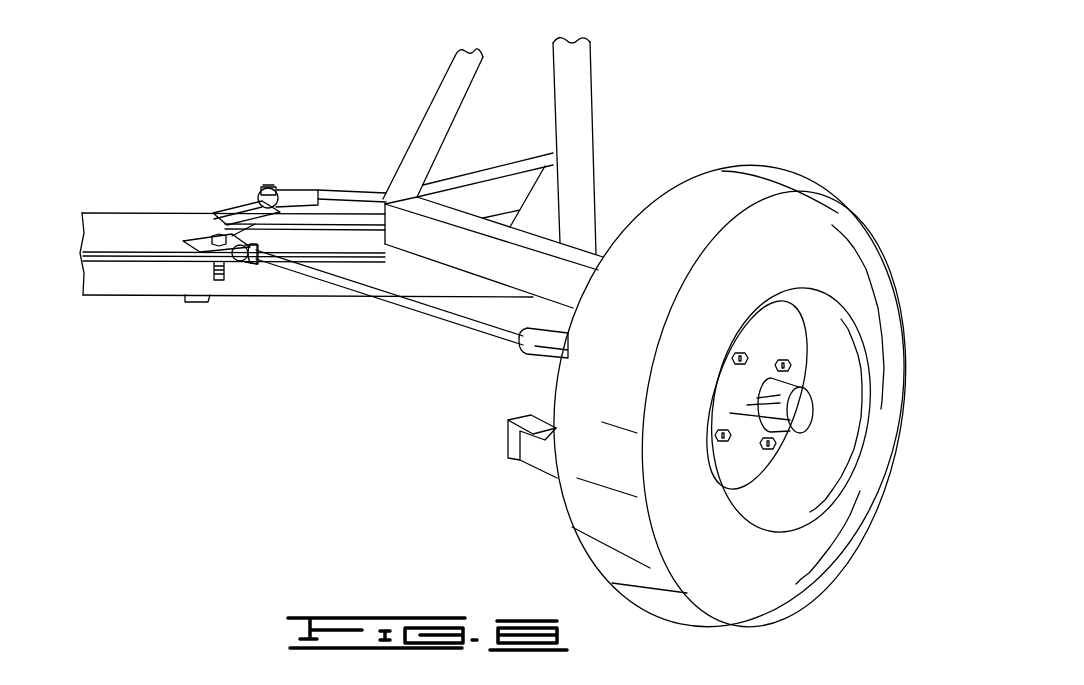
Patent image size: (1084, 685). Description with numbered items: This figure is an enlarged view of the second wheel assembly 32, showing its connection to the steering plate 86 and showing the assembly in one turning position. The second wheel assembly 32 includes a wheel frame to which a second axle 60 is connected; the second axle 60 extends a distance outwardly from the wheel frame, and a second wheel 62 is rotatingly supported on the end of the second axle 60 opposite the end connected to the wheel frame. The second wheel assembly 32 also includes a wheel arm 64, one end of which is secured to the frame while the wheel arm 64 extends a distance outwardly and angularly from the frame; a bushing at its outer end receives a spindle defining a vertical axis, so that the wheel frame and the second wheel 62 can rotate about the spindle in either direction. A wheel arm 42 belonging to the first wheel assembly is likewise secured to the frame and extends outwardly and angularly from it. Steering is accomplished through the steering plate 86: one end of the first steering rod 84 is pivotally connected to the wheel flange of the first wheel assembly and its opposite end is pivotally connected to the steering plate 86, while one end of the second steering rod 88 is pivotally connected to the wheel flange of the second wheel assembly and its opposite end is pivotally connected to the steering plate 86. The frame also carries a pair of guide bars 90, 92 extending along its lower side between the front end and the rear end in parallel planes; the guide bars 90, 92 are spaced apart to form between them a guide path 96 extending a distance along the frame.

The second wheel assembly 32 is at (728, 380).
The wheel arm 42 is at (507, 190).
The second axle 60 is at (815, 410).
The second wheel 62 is at (860, 217).
The wheel arm 64 is at (490, 272).
The first steering rod 84 is at (383, 297).
The steering plate 86 is at (160, 226).
The second steering rod 88 is at (347, 187).
The guide bar 90 is at (303, 224).
The guide bar 92 is at (262, 288).
The guide path 96 is at (323, 243).